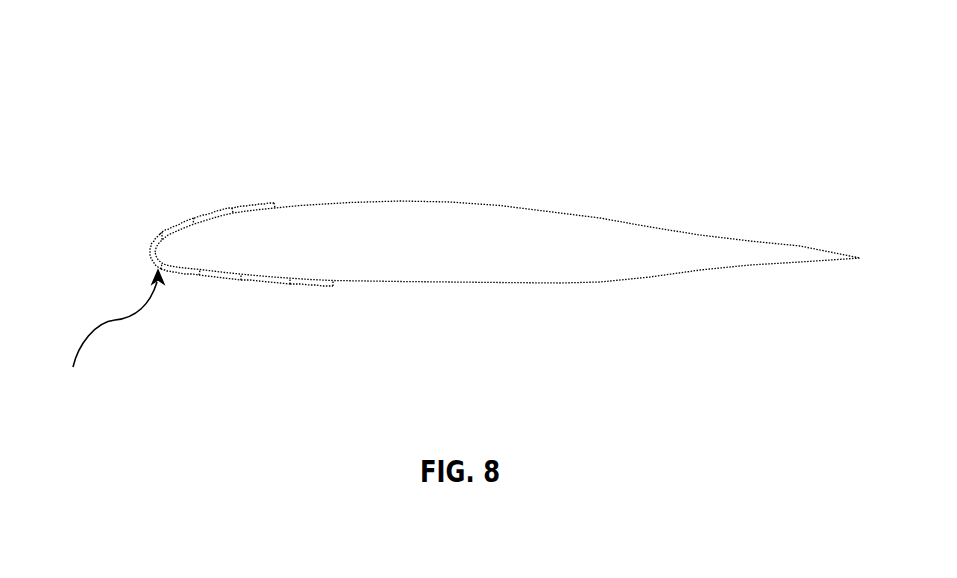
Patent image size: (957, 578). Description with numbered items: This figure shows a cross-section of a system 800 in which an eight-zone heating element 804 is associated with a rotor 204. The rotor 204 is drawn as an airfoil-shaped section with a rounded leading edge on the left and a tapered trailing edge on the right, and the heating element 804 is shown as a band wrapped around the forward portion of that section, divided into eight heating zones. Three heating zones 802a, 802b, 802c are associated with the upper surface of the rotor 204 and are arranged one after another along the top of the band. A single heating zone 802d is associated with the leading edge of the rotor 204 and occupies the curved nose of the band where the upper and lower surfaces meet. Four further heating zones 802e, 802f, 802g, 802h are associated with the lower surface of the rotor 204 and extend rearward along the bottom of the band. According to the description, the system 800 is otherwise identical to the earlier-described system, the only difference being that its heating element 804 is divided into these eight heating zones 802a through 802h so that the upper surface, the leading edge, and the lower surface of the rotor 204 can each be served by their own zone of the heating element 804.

The system 800 is at (90, 25).
The rotor 204 is at (590, 217).
The heating zone 802a is at (257, 203).
The heating zone 802b is at (205, 214).
The heating zone 802c is at (161, 231).
The heating zone 802d is at (150, 255).
The heating zone 802e is at (184, 273).
The heating zone 802f is at (221, 278).
The heating zone 802g is at (263, 281).
The heating zone 802h is at (326, 286).
The heating element 804 is at (110, 336).